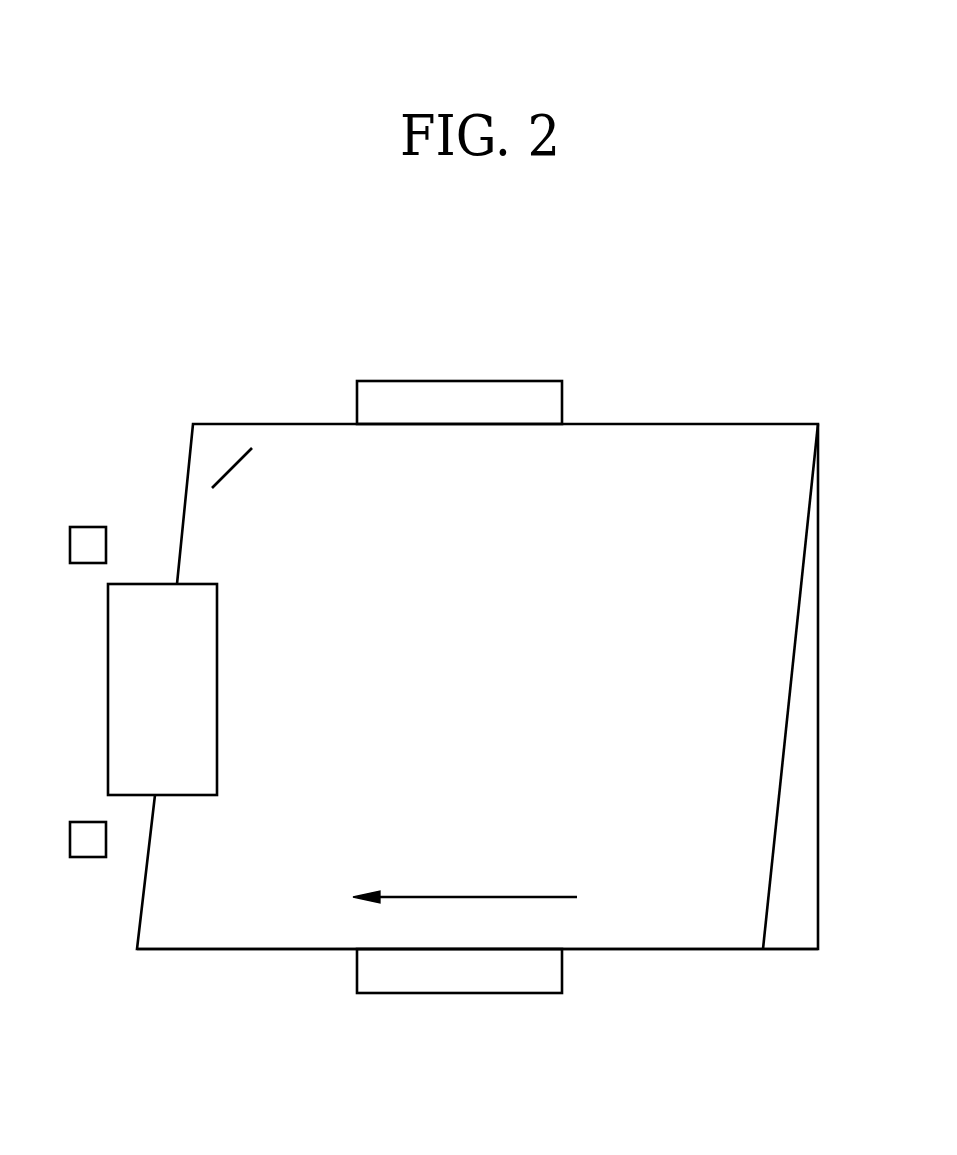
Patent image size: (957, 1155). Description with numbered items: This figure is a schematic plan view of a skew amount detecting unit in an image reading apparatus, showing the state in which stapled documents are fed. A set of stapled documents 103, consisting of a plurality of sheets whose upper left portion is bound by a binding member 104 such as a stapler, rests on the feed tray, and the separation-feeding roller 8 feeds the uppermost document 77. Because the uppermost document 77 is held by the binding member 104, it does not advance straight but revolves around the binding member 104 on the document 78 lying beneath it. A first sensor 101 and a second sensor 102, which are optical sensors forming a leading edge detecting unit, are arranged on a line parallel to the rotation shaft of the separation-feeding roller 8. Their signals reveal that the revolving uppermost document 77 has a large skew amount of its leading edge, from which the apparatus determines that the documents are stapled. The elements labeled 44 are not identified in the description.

The separation-feeding roller 8 is at (202, 690).
The heater 44 is at (480, 384).
The uppermost document 77 is at (258, 938).
The document therebelow 78 is at (806, 845).
The first sensor 101 is at (85, 527).
The second sensor 102 is at (88, 850).
The stapled documents 103 is at (718, 423).
The binding member 104 is at (236, 468).